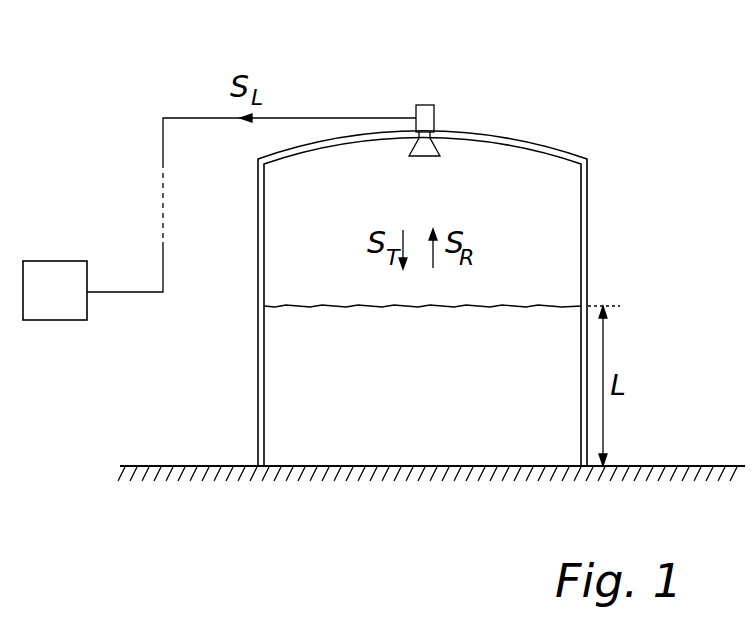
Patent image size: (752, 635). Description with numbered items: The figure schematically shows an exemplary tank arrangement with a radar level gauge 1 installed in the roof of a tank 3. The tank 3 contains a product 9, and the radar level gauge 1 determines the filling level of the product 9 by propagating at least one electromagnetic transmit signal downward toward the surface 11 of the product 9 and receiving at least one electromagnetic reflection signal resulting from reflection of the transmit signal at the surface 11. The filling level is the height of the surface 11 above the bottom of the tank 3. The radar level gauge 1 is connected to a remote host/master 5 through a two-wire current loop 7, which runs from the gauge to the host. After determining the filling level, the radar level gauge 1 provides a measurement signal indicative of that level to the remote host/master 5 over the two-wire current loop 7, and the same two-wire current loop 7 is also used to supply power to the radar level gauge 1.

The radar level gauge 1 is at (440, 91).
The tank 3 is at (587, 232).
The remote host/master 5 is at (45, 307).
The two-wire current loop 7 is at (126, 144).
The product 9 is at (418, 399).
The surface 11 is at (292, 306).